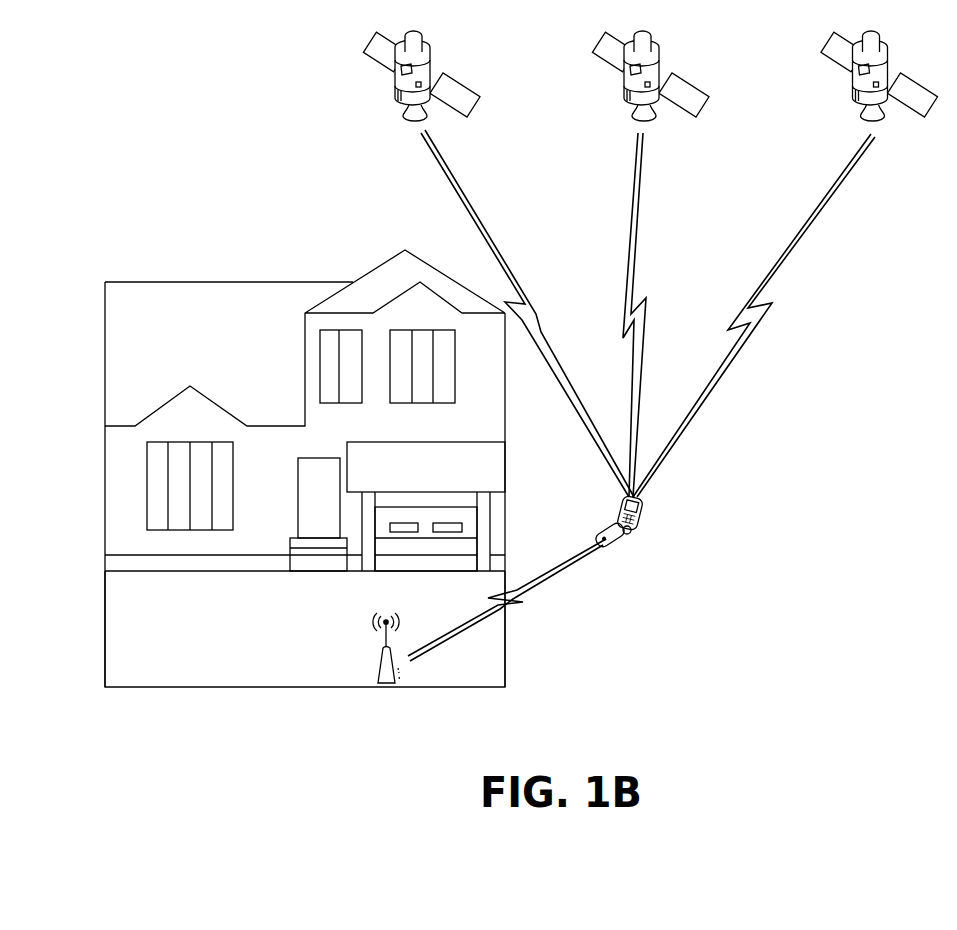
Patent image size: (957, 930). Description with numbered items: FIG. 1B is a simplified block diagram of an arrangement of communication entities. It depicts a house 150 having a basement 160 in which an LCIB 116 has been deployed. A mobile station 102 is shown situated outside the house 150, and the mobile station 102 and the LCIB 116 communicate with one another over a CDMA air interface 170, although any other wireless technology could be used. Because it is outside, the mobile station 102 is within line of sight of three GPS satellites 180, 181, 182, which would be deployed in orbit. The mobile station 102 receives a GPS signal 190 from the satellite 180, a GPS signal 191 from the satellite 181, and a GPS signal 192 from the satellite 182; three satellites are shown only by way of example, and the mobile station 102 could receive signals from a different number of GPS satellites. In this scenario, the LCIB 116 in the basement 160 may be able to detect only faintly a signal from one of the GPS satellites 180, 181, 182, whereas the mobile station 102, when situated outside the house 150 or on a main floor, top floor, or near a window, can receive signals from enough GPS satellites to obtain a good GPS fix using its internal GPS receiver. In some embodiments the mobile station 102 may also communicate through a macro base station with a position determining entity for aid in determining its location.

The mobile station 102 is at (630, 535).
The LCIB 116 is at (378, 672).
The house 150 is at (228, 332).
The basement 160 is at (320, 637).
The CDMA air interface 170 is at (528, 585).
The GPS satellite 180 is at (420, 122).
The GPS satellite 181 is at (633, 122).
The GPS satellite 182 is at (918, 118).
The GPS signal 190 is at (453, 190).
The GPS signal 191 is at (633, 227).
The GPS signal 192 is at (733, 358).